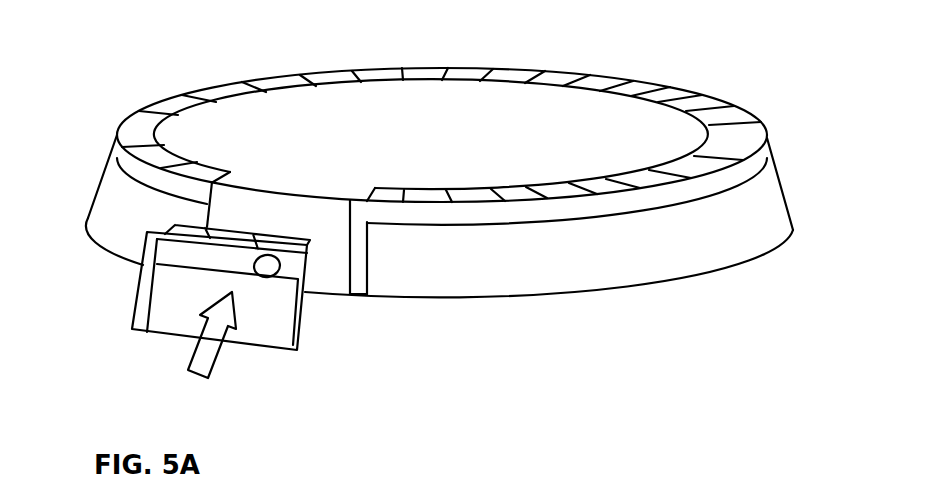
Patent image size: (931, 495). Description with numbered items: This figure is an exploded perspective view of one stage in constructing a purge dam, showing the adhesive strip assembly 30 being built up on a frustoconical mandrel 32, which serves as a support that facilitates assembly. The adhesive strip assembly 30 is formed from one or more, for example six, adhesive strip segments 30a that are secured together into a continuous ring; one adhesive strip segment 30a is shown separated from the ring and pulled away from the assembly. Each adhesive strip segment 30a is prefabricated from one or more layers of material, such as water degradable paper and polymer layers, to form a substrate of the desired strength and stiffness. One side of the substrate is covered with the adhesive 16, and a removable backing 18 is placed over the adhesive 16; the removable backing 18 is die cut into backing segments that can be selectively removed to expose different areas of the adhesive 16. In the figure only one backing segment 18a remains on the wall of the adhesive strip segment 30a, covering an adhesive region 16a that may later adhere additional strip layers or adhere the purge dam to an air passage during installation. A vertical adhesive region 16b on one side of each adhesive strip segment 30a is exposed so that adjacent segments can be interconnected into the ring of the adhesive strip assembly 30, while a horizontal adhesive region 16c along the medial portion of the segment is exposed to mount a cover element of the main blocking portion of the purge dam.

The adhesive 16 is at (274, 319).
The adhesive region 16a is at (273, 320).
The vertical adhesive region 16b is at (143, 303).
The horizontal adhesive region 16c is at (290, 272).
The removable backing 18 is at (172, 324).
The backing segment 18a is at (560, 280).
The adhesive strip assembly 30 is at (439, 247).
The adhesive strip segment 30a is at (287, 333).
The frustoconical mandrel 32 is at (448, 146).